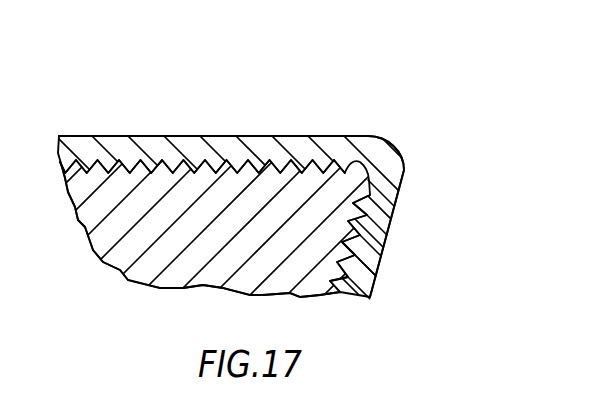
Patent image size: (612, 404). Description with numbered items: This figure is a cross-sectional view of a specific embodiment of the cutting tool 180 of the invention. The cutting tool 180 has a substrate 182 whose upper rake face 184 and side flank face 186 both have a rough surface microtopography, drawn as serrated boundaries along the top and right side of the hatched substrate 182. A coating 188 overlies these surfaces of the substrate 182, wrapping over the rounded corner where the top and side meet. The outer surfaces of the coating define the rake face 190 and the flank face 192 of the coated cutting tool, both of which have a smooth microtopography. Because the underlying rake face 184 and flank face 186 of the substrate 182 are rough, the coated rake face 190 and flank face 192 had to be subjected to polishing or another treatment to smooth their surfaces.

The cutting tool 180 is at (118, 103).
The substrate 182 is at (130, 274).
The rake face 184 is at (178, 136).
The flank face 186 is at (390, 221).
The coating 188 is at (400, 158).
The rake face of the coated cutting tool 190 is at (322, 136).
The flank face of the coated cutting tool 192 is at (378, 276).